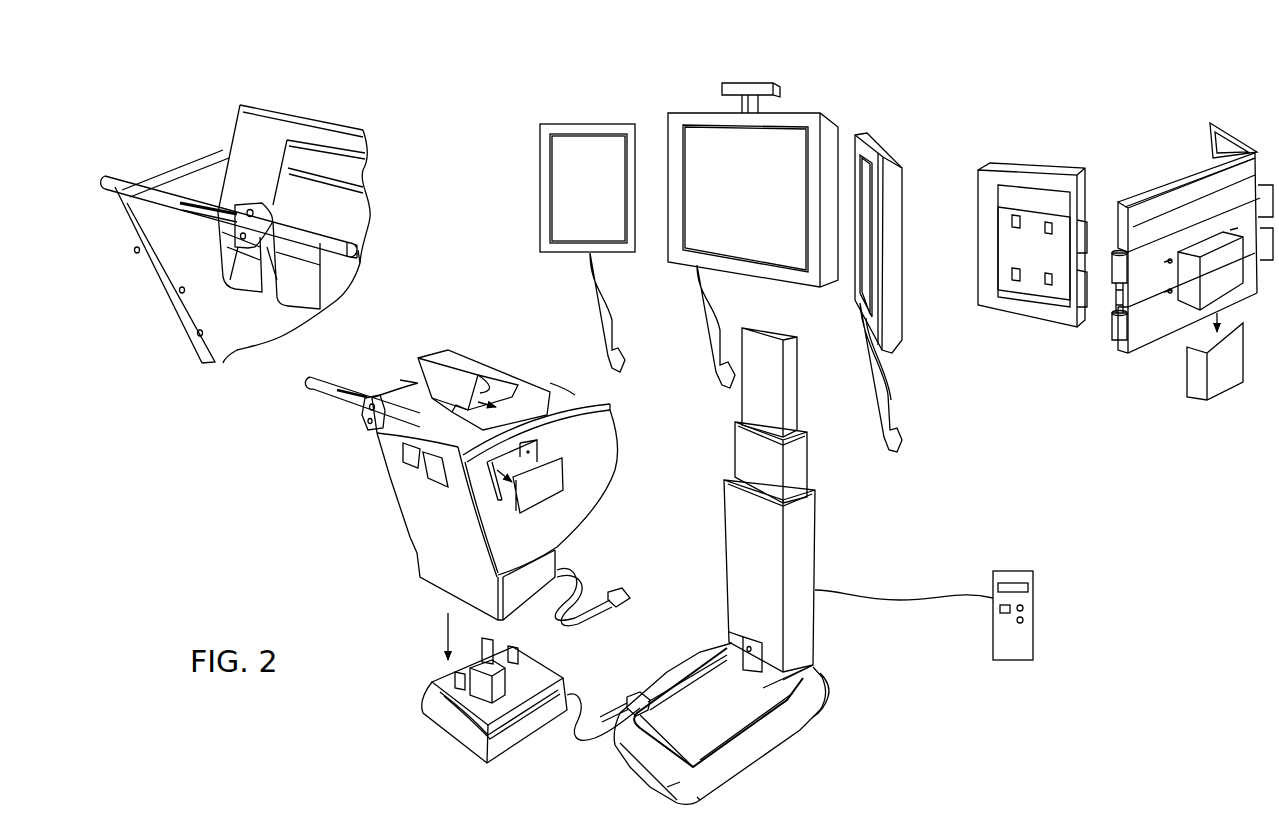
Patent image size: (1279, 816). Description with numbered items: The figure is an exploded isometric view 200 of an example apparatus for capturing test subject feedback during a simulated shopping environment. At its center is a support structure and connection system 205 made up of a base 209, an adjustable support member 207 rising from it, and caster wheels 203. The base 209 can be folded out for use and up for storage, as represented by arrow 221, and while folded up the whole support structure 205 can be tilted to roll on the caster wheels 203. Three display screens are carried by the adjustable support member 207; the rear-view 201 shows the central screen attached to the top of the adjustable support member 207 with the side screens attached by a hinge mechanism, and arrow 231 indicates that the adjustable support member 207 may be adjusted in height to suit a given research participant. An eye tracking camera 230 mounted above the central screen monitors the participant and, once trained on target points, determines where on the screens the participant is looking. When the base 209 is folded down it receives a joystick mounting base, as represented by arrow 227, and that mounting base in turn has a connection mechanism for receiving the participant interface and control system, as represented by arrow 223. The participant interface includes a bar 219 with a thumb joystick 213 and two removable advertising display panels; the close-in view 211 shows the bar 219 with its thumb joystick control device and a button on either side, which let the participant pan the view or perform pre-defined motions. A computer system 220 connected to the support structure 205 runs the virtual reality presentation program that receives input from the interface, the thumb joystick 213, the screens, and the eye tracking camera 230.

The exploded isometric view 200 is at (828, 53).
The rear-view 201 is at (1152, 67).
The caster wheels 203 is at (830, 690).
The support structure and connection system 205 is at (858, 570).
The adjustable support member 207 is at (737, 400).
The base 209 is at (777, 753).
The close-in view 211 is at (192, 106).
The thumb joystick 213 is at (248, 225).
The bar 219 is at (185, 188).
The computer system 220 is at (1040, 603).
The arrow 221 is at (692, 650).
The arrow 223 is at (440, 626).
The arrow 227 is at (612, 777).
The eye tracking camera 230 is at (780, 88).
The arrow 231 is at (847, 443).